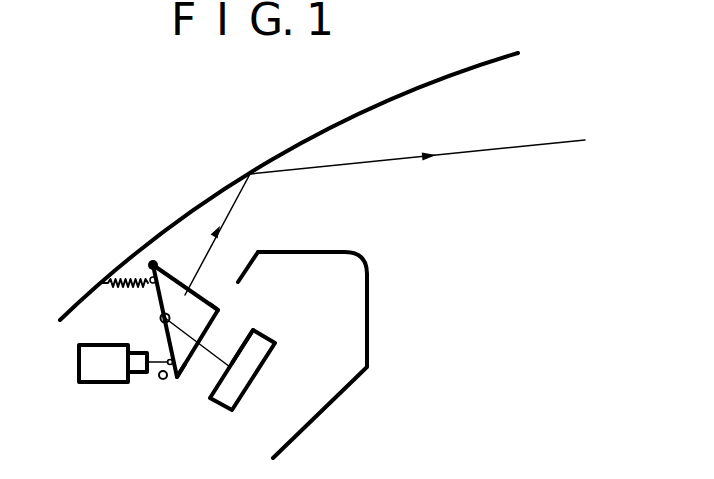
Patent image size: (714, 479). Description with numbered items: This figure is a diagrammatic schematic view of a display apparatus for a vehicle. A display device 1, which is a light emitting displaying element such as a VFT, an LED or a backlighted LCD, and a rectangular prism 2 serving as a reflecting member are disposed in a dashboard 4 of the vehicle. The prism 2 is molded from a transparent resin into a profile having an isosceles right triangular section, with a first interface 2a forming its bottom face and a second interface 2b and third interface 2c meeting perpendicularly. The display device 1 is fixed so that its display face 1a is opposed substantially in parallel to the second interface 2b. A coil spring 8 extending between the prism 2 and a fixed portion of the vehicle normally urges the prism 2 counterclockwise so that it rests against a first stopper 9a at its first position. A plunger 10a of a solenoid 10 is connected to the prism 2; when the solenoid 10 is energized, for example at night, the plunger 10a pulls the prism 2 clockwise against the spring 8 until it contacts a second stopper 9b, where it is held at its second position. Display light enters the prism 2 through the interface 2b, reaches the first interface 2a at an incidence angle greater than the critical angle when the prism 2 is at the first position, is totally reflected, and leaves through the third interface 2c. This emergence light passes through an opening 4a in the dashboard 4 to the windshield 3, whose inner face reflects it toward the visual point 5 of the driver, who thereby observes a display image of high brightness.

The display device 1 is at (250, 368).
The display face 1a is at (238, 343).
The rectangular prism 2 is at (175, 280).
The first interface 2a is at (158, 342).
The second interface 2b is at (184, 382).
The third interface 2c is at (218, 306).
The windshield 3 is at (365, 107).
The dashboard 4 is at (348, 268).
The opening 4a is at (246, 256).
The visual point 5 is at (604, 130).
The coil spring 8 is at (130, 276).
The first stopper 9a is at (150, 247).
The second stopper 9b is at (163, 380).
The solenoid 10 is at (79, 362).
The plunger 10a is at (133, 376).